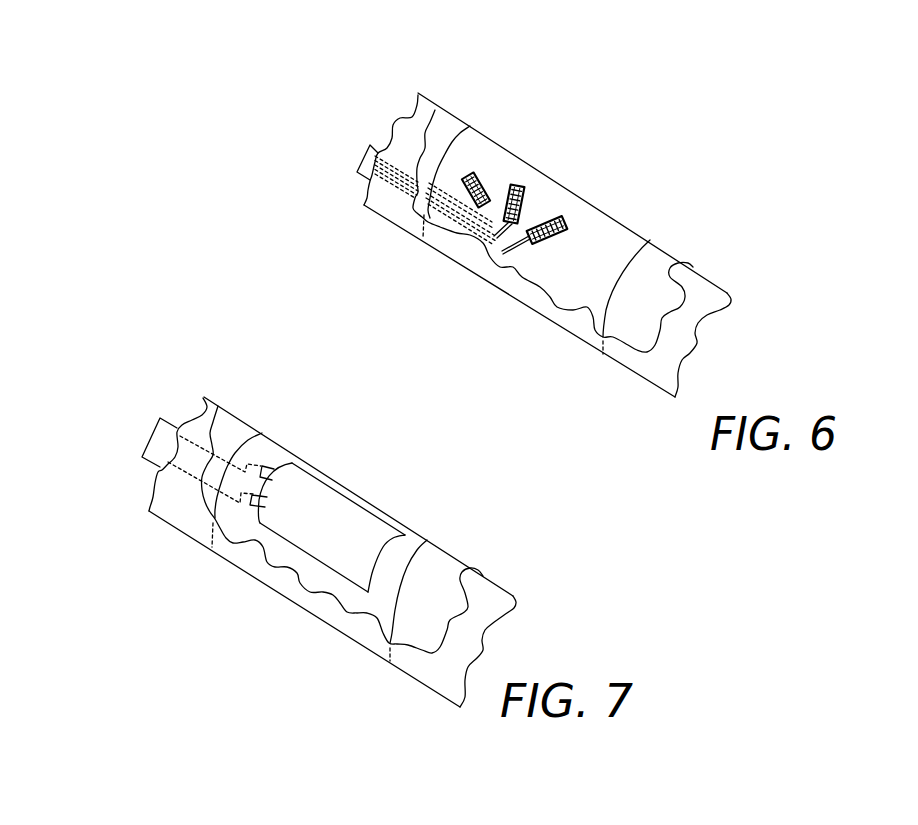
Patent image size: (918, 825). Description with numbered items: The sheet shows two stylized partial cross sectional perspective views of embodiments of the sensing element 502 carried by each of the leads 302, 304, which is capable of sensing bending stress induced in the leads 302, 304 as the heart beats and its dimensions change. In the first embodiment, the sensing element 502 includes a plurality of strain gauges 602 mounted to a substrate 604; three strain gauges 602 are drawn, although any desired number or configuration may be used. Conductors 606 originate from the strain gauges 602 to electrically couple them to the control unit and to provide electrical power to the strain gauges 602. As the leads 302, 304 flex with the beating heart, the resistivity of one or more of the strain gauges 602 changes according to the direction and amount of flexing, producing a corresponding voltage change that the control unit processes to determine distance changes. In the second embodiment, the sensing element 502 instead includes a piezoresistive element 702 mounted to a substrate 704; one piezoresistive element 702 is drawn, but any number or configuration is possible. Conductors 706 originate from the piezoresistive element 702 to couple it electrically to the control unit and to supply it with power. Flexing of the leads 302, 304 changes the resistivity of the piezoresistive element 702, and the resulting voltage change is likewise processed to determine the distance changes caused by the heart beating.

In FIG. 6, the lead 302 is at (452, 138).
In FIG. 7, the lead 302 is at (238, 439).
In FIG. 6, the lead 304 is at (429, 98).
In FIG. 7, the lead 304 is at (213, 402).
In FIG. 6, the sensing element 502 is at (487, 297).
In FIG. 7, the sensing element 502 is at (234, 602).
In FIG. 6, the strain gauge 602 is at (476, 169).
In FIG. 6, the substrate 604 is at (587, 270).
In FIG. 6, the conductor 606 is at (362, 157).
In FIG. 7, the piezoresistive element 702 is at (308, 500).
In FIG. 7, the substrate 704 is at (400, 553).
In FIG. 7, the conductor 706 is at (149, 434).